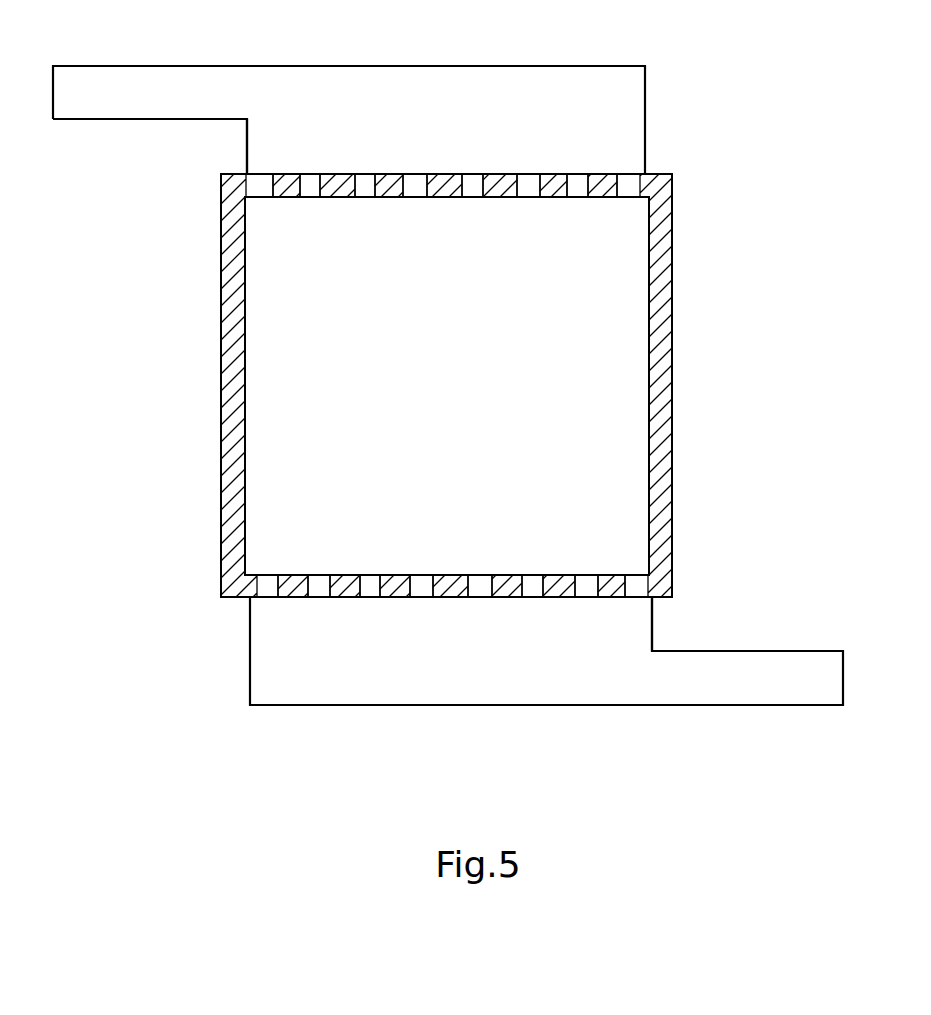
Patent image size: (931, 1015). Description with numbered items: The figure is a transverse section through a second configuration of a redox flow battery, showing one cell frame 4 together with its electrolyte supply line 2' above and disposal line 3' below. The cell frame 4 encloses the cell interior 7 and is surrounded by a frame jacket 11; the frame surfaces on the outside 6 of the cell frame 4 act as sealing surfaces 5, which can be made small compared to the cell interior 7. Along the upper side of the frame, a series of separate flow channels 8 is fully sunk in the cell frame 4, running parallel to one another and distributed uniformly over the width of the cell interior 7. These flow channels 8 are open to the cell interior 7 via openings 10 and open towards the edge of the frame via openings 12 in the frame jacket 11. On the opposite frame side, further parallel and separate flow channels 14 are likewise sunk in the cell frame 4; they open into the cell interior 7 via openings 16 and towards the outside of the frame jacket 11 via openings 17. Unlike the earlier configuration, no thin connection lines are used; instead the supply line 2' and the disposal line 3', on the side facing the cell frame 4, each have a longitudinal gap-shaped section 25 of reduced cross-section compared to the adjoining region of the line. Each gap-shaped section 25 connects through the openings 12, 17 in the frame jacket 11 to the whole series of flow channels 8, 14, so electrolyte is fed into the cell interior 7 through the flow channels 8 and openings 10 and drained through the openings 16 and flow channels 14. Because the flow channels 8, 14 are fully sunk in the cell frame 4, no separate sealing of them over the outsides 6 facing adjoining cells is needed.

The supply line 2' is at (349, 89).
The disposal line 3' is at (546, 682).
The gap-shaped section 25 is at (257, 138).
The cell frame 4 is at (674, 235).
The sealing surface 5 is at (667, 290).
The outside of the cell frame 6 is at (683, 364).
The cell interior 7 is at (456, 392).
The flow channels 8 is at (365, 192).
The openings 10 is at (413, 197).
The frame jacket 11 is at (222, 283).
The openings 12 is at (412, 173).
The flow channels 14 is at (368, 578).
The openings 16 is at (423, 578).
The openings 17 is at (318, 598).